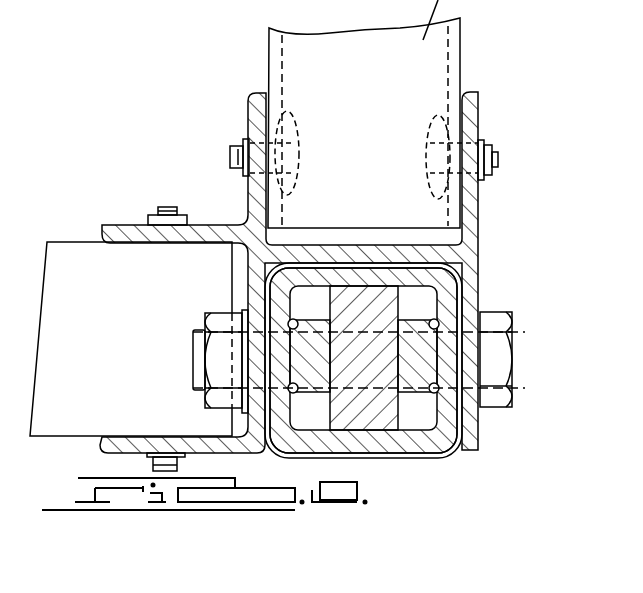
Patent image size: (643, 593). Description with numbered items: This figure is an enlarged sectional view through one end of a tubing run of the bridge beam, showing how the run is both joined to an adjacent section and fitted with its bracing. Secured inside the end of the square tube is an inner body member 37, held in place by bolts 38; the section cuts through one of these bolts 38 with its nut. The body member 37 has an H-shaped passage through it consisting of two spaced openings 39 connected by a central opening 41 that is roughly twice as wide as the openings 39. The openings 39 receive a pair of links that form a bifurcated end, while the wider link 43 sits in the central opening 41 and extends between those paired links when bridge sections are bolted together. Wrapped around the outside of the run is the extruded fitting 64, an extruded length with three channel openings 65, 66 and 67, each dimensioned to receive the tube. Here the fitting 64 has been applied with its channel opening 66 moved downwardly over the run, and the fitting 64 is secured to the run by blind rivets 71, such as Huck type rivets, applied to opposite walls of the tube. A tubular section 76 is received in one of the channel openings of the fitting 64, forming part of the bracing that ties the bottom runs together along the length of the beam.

The inner body member 37 is at (452, 288).
The bolt 38 is at (497, 352).
The spaced opening 39 is at (458, 270).
The central opening 41 is at (390, 355).
The link 43 is at (350, 297).
The fitting 64 is at (480, 110).
The channel opening 65 is at (458, 90).
The channel opening 66 is at (452, 380).
The channel opening 67 is at (128, 245).
The blind rivet 71 is at (497, 153).
The tubular section 76 is at (68, 257).